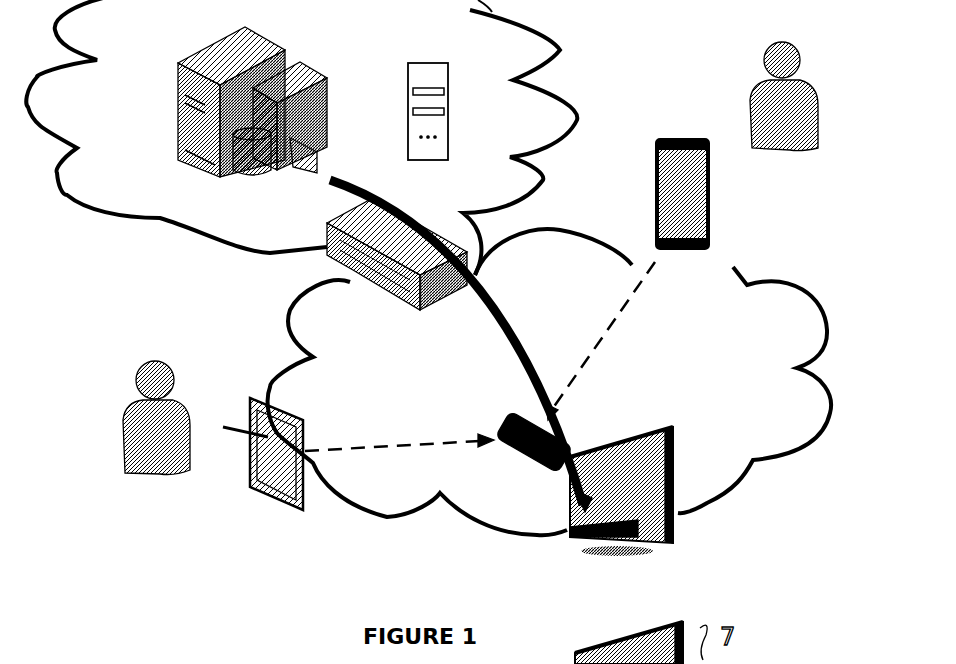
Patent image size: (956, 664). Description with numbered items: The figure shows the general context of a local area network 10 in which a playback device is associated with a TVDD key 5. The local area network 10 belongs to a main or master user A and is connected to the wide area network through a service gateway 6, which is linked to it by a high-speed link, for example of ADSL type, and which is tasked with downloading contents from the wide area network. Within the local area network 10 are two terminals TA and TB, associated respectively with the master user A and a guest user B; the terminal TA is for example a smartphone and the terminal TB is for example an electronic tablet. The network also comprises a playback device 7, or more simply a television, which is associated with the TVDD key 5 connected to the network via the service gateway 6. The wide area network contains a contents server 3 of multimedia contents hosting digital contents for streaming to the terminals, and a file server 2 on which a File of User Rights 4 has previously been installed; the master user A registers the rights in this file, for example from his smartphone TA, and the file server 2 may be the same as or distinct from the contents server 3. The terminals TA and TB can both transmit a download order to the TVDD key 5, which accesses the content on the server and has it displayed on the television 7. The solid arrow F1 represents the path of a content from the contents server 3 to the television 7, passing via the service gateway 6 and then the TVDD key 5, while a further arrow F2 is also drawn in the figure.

The file server 2 is at (335, 90).
The contents server 3 is at (297, 57).
The File of User Rights 4 is at (450, 100).
The TVDD key 5 is at (500, 420).
The service gateway 6 is at (440, 227).
The playback device 7 is at (688, 442).
The local area network 10 is at (805, 290).
The main user A is at (817, 75).
The guest user B is at (120, 418).
The terminal TA is at (710, 143).
The terminal TB is at (303, 420).
The solid arrow F1 is at (537, 388).
The second flow F2 is at (274, 346).